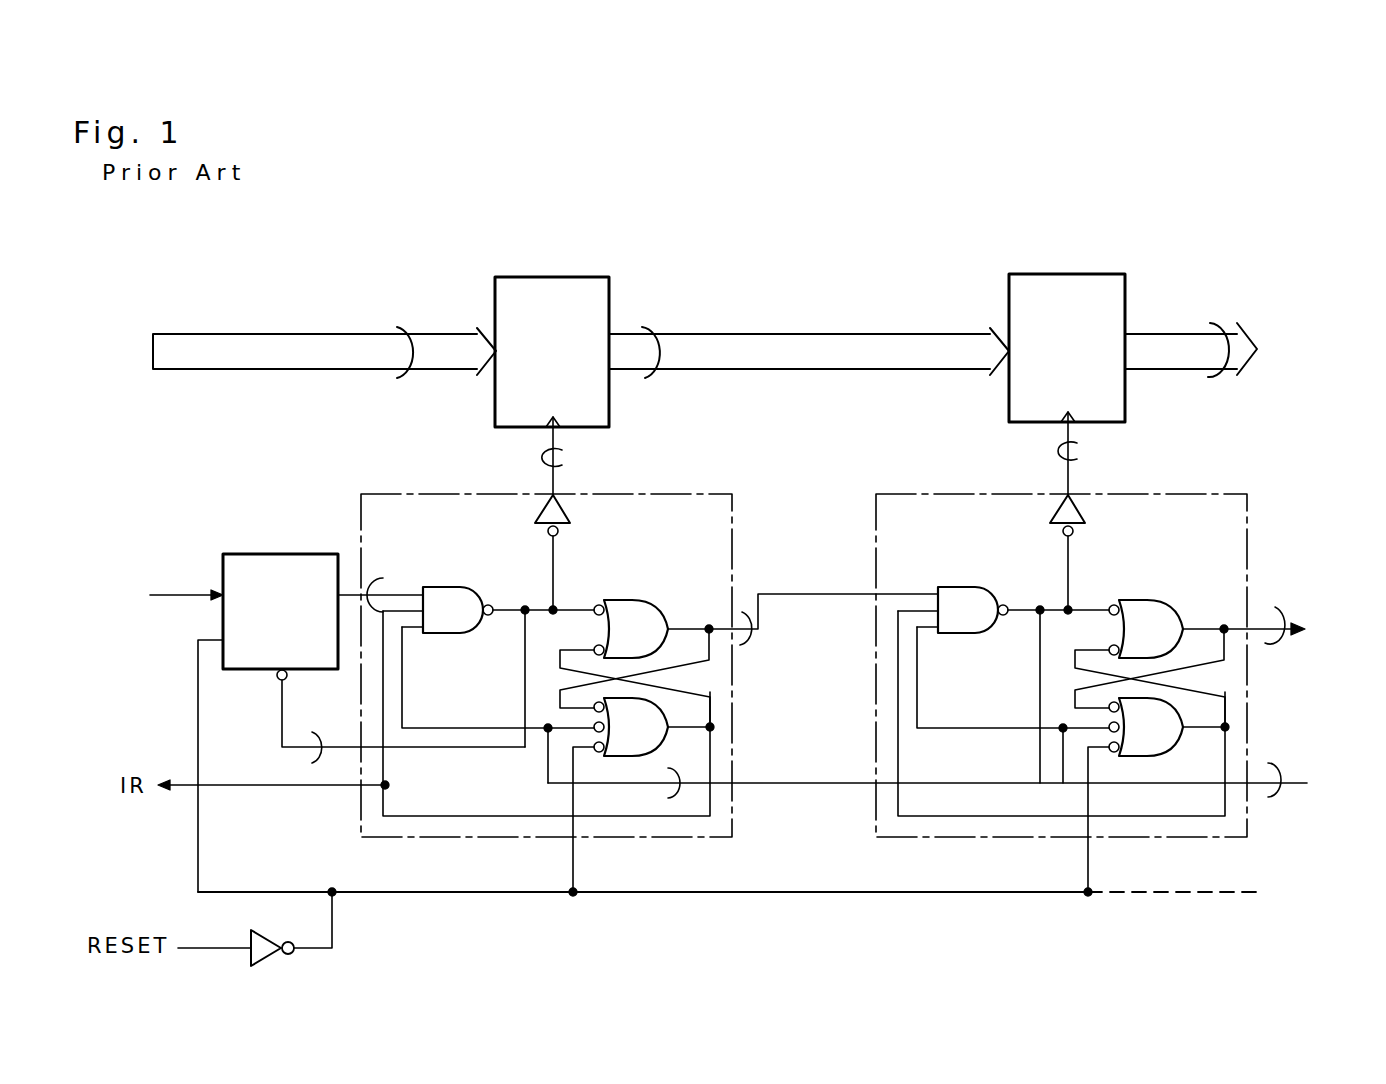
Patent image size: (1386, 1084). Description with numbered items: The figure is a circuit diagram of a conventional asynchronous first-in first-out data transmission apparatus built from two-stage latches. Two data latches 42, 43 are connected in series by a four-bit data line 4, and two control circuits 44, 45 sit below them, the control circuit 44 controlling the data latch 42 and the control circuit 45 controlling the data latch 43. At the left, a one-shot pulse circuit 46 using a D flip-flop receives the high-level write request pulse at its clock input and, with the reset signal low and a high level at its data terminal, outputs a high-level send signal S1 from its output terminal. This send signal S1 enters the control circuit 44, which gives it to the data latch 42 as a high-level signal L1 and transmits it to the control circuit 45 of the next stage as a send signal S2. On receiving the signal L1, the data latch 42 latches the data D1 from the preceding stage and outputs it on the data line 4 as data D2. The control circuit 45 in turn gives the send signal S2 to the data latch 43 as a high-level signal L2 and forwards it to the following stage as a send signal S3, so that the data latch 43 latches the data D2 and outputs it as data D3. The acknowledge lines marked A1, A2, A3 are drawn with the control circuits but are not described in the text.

The four-bit data line 4 is at (1192, 378).
The data latch 42 is at (551, 277).
The data latch 43 is at (1084, 274).
The control circuit 44 is at (715, 494).
The control circuit 45 is at (1222, 494).
The one-shot pulse circuit 46 is at (273, 554).
The data D1 is at (410, 327).
The data D2 is at (653, 327).
The data D3 is at (1213, 323).
The high-level signal L1 is at (562, 465).
The high-level signal L2 is at (1077, 459).
The SEND signal S1 is at (383, 578).
The SEND signal S2 is at (742, 612).
The SEND signal S3 is at (1275, 607).
The acknowledge signal A1 (inverted) A1 is at (312, 763).
The acknowledge signal A2 (inverted) A2 is at (668, 798).
The acknowledge signal A3 (inverted) A3 is at (1268, 797).